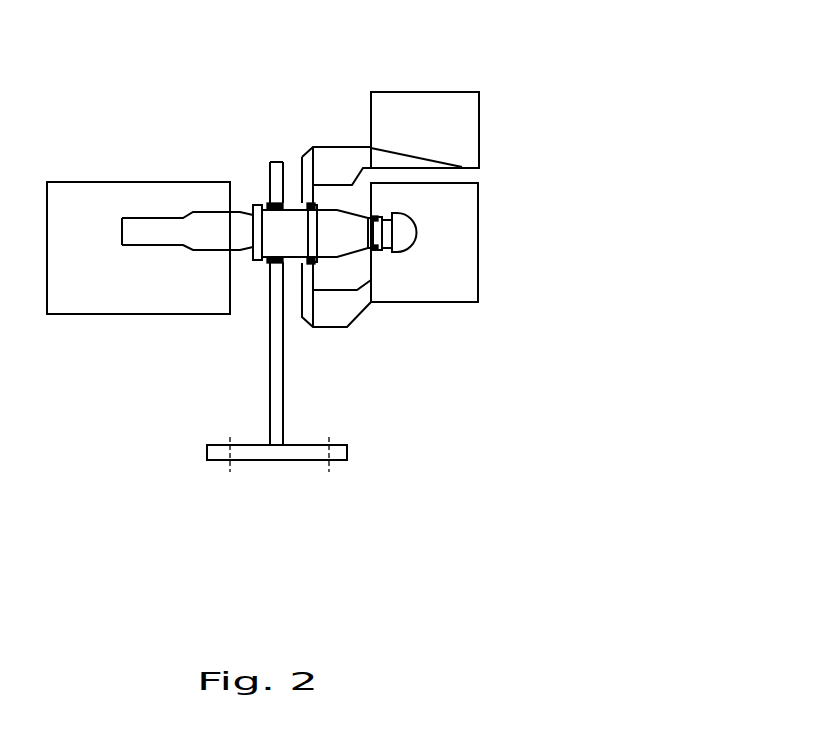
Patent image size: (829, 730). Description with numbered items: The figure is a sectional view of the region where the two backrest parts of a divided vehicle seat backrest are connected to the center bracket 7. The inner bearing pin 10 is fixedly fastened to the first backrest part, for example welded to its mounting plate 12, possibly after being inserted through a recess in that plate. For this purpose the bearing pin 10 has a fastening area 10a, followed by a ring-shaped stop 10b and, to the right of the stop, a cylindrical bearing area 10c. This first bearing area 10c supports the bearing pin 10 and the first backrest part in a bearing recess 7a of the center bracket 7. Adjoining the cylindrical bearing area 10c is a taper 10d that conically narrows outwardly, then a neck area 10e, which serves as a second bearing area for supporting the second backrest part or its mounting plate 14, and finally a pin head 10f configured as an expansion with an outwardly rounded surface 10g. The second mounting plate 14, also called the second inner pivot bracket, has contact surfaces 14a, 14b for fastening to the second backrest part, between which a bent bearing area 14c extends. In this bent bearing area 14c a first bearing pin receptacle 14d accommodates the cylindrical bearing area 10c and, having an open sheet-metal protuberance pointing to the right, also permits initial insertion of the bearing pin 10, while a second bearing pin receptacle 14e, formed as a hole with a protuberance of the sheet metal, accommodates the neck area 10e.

The center bracket 7 is at (273, 423).
The bearing recess 7a is at (265, 203).
The inner bearing pin 10 is at (255, 207).
The fastening area 10a is at (155, 237).
The ring-shaped stop 10b is at (258, 262).
The cylindrical bearing area 10c is at (303, 210).
The taper 10d is at (361, 216).
The neck area 10e is at (383, 251).
The pin head 10f is at (416, 222).
The rounded surface 10g is at (410, 247).
The mounting plate 12 is at (100, 188).
The mounting plate 14 is at (474, 112).
The contact surface 14a is at (432, 92).
The contact surface 14b is at (478, 292).
The bent bearing area 14c is at (342, 153).
The first bearing pin receptacle 14d is at (313, 290).
The second bearing pin receptacle 14e is at (374, 251).